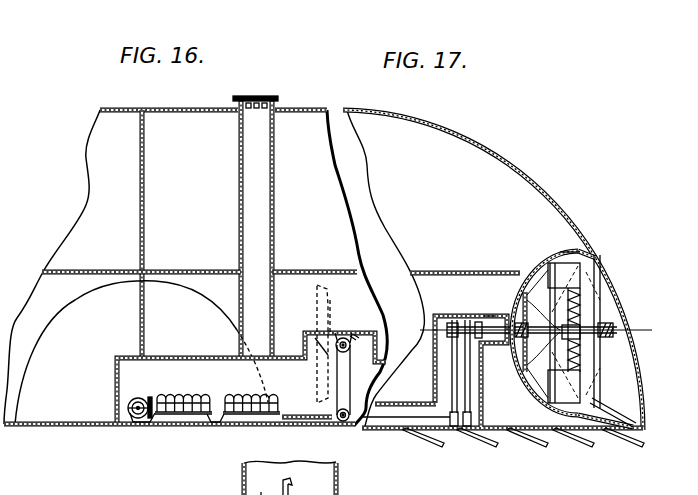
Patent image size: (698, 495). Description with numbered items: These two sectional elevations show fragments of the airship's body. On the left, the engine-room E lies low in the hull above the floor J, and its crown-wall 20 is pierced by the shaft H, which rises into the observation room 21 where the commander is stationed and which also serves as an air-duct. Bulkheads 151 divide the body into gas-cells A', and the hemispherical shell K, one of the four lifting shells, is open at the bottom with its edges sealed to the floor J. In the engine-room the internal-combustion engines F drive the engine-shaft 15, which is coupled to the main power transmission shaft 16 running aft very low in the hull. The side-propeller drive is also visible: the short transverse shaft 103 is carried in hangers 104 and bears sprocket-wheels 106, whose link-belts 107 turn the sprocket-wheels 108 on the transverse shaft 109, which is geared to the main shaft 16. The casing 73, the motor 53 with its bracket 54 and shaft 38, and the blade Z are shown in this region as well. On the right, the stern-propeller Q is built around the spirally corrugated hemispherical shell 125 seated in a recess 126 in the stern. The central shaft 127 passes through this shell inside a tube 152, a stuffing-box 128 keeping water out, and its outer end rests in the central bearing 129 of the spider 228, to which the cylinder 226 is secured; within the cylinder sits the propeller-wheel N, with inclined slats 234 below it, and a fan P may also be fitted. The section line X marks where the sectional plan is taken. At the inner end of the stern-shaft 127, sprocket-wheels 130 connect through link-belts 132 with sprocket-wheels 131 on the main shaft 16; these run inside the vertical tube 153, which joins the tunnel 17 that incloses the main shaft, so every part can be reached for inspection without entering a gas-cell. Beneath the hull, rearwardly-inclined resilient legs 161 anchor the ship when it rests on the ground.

In FIG. 16, the crown-wall 20 is at (213, 99).
In FIG. 16, the observation room 21 is at (255, 217).
In FIG. 16, the shaft H is at (238, 197).
In FIG. 16, the bulkheads 151 is at (140, 220).
In FIG. 17, the bulkheads 151 is at (428, 272).
In FIG. 16, the gas-cells A' is at (146, 146).
In FIG. 17, the gas-cells A' is at (452, 238).
In FIG. 16, the hemispherical shell K is at (141, 352).
In FIG. 16, the casing 73 is at (190, 357).
In FIG. 16, the main power transmission shaft 16 is at (362, 427).
In FIG. 16, the floor J is at (35, 427).
In FIG. 17, the floor J is at (448, 431).
In FIG. 16, the motor 53 is at (133, 399).
In FIG. 16, the bracket 54 is at (151, 396).
In FIG. 16, the shaft 38 is at (138, 412).
In FIG. 16, the internal-combustion engines F is at (217, 395).
In FIG. 16, the engine-room E is at (292, 380).
In FIG. 16, the engine-shaft 15 is at (297, 415).
In FIG. 16, the propeller blade Z is at (315, 301).
In FIG. 16, the hangers 104 is at (342, 331).
In FIG. 16, the short transverse shaft 103 is at (350, 344).
In FIG. 16, the sprocket-wheels 106 is at (349, 335).
In FIG. 16, the link-belts 107 is at (353, 372).
In FIG. 16, the sprocket-wheels 108 is at (338, 421).
In FIG. 16, the transverse shaft 109 is at (343, 421).
In FIG. 16, the tube 152 is at (340, 473).
In FIG. 17, the tube 152 is at (491, 312).
In FIG. 16, the stuffing-box 128 is at (261, 485).
In FIG. 16, the central shaft 127 is at (297, 488).
In FIG. 17, the central shaft 127 is at (477, 320).
In FIG. 17, the recess 126 is at (631, 407).
In FIG. 17, the vertical tube 153 is at (440, 390).
In FIG. 17, the tube or tunnel 17 is at (398, 410).
In FIG. 17, the section line X is at (536, 331).
In FIG. 17, the sprocket-wheels 130 is at (456, 322).
In FIG. 17, the link-belts 132 is at (459, 383).
In FIG. 17, the sprocket-wheels 131 is at (471, 411).
In FIG. 17, the hemispherical shell 125 is at (554, 259).
In FIG. 17, the cylinder 226 is at (574, 256).
In FIG. 17, the stern-propeller Q is at (617, 244).
In FIG. 17, the spider 228 is at (587, 291).
In FIG. 17, the central bearing 129 is at (614, 326).
In FIG. 17, the propeller-wheel N is at (590, 355).
In FIG. 17, the fan P is at (598, 368).
In FIG. 17, the inclined slats 234 is at (592, 388).
In FIG. 17, the resilient legs 161 is at (534, 449).